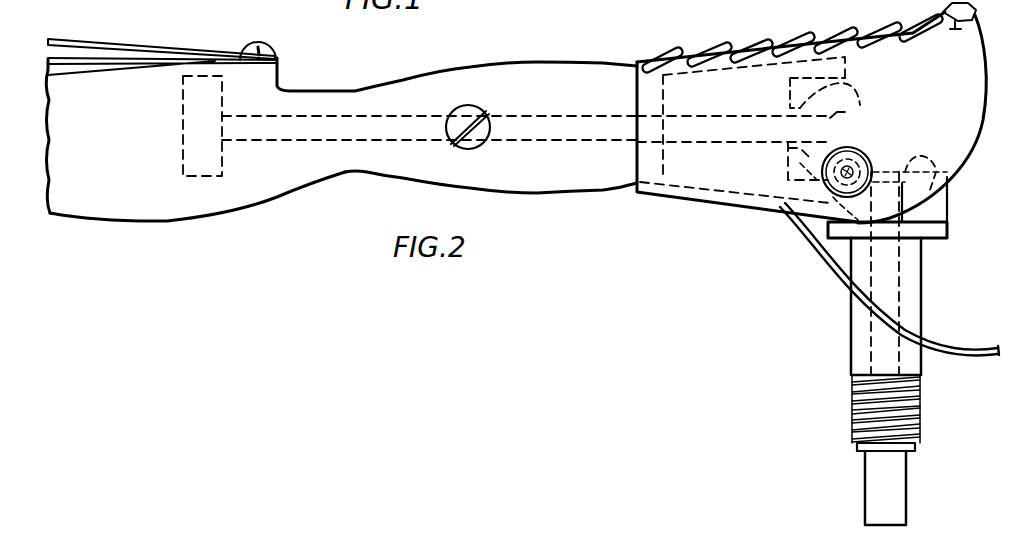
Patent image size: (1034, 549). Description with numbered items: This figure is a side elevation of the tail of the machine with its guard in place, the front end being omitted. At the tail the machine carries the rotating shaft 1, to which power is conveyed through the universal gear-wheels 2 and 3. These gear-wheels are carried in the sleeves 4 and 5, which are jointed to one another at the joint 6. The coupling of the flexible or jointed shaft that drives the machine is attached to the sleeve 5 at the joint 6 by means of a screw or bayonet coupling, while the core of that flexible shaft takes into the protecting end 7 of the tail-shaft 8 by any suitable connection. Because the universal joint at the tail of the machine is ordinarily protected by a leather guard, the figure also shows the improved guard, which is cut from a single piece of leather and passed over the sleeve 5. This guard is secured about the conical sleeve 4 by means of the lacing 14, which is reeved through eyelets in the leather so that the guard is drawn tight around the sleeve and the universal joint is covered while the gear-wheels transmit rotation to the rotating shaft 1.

The rotating shaft 1 is at (836, 126).
The universal gear-wheel 2 is at (850, 90).
The universal gear-wheel 3 is at (916, 158).
The sleeve 4 is at (763, 185).
The sleeve 5 is at (915, 289).
The joint 6 is at (861, 160).
The protecting end 7 is at (897, 491).
The tail-shaft 8 is at (890, 262).
The lacing 14 is at (800, 37).